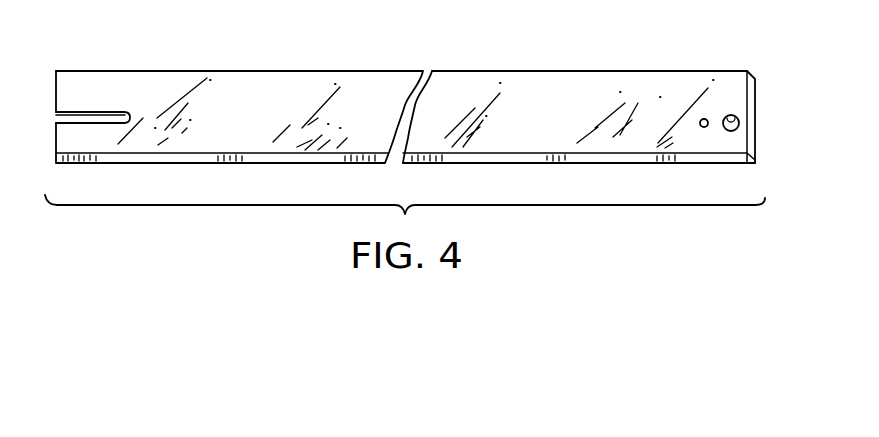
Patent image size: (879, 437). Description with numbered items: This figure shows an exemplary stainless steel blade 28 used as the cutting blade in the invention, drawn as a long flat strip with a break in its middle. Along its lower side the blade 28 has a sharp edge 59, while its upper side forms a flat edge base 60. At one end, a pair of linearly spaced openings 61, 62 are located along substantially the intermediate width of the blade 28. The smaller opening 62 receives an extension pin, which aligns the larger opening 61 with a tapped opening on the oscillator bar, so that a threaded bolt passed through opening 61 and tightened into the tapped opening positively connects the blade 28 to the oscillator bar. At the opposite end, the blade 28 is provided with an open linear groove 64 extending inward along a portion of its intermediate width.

The stainless steel blade 28 is at (262, 83).
The open linear groove 64 is at (105, 117).
The flat edge base 60 is at (527, 73).
The sharp edge 59 is at (519, 160).
The opening 62 is at (704, 118).
The opening 61 is at (731, 115).